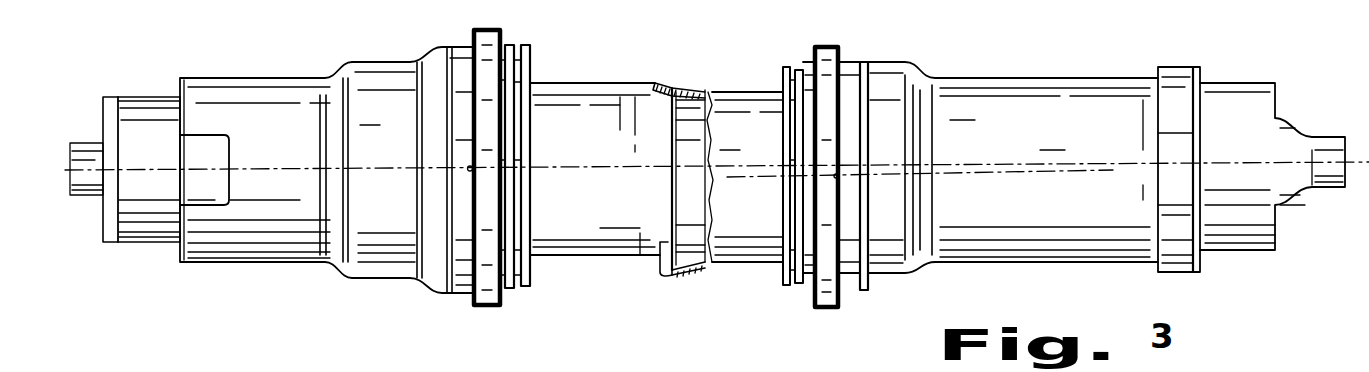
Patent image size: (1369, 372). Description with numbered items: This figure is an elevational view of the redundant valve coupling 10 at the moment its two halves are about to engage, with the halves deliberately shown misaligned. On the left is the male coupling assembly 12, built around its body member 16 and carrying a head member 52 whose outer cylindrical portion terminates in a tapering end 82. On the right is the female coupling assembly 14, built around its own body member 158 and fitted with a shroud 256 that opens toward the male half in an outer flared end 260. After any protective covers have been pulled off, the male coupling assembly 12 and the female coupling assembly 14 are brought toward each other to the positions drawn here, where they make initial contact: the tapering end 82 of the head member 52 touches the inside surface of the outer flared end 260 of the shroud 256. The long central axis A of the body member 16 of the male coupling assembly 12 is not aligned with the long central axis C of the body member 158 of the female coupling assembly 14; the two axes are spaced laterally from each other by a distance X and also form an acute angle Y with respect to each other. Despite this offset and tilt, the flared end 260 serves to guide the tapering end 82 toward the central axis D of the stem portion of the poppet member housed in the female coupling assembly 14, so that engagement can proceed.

The redundant valve coupling 10 is at (615, 264).
The male coupling assembly 12 is at (321, 264).
The female coupling assembly 14 is at (969, 267).
The body member 16 is at (148, 96).
The head member 52 is at (536, 82).
The tapering end 82 is at (640, 80).
The body member 158 is at (1210, 86).
The shroud 256 is at (757, 265).
The outer flared end 260 is at (690, 81).
The long central axis A is at (335, 167).
The long central axis C is at (1034, 172).
The central axis D is at (756, 157).
The lateral distance X is at (651, 145).
The acute angle Y is at (640, 183).